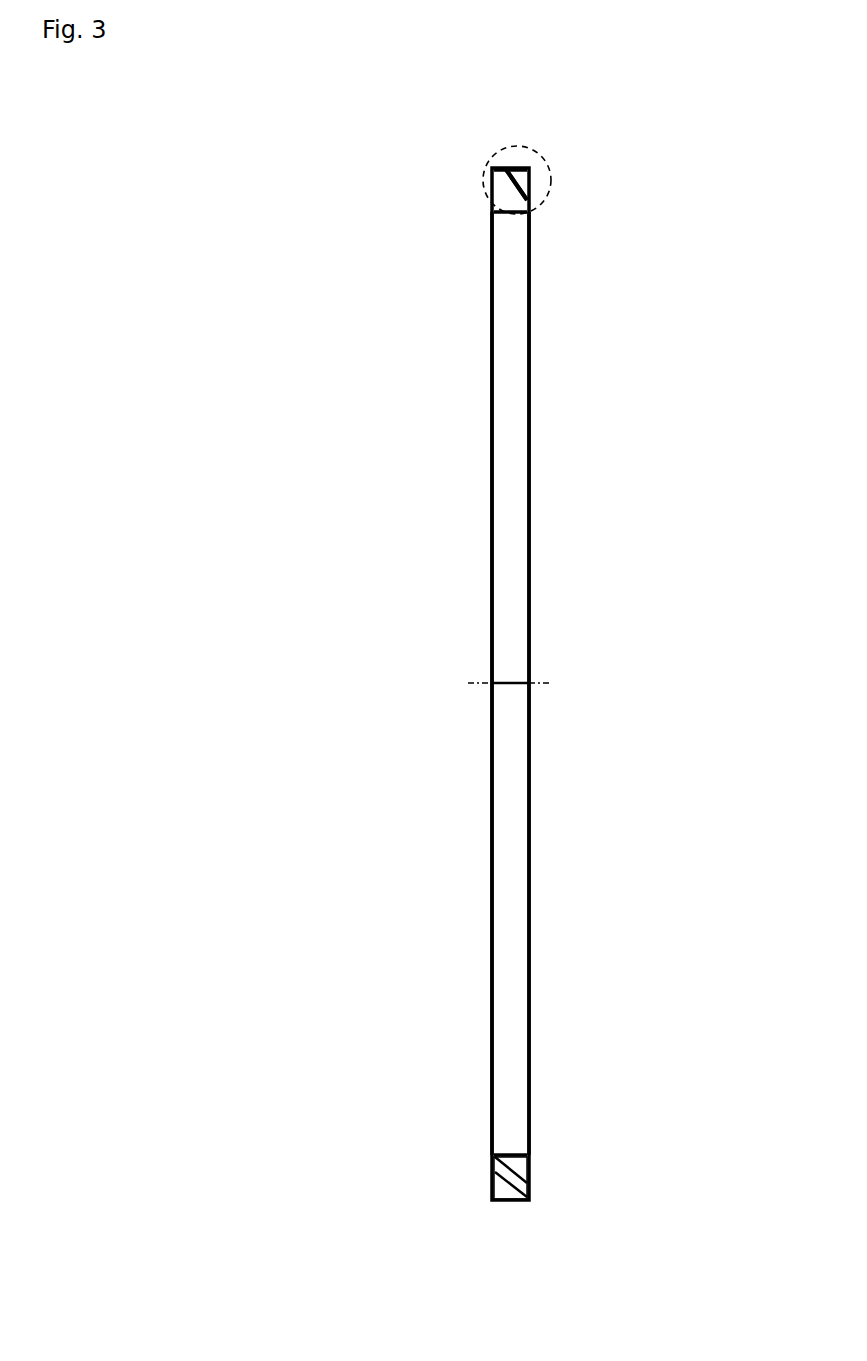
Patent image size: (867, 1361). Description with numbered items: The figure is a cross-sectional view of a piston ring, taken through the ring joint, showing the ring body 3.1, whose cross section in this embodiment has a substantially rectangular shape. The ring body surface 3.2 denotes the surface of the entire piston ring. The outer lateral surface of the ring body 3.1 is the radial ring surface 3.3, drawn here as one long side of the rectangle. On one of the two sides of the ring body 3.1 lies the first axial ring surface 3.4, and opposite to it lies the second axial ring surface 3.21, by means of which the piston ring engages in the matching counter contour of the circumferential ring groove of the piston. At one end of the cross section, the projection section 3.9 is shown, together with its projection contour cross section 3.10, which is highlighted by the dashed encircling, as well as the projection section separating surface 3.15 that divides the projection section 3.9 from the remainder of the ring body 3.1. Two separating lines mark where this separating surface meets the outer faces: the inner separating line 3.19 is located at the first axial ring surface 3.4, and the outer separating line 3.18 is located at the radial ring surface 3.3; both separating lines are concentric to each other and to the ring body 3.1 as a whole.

The ring body 3.1 is at (462, 442).
The ring body surface 3.2 is at (555, 295).
The radial ring surface 3.3 is at (512, 1205).
The first axial ring surface 3.4 is at (530, 498).
The projection section 3.9 is at (530, 178).
The projection contour cross section 3.10 is at (574, 143).
The projection section separating surface 3.15 is at (523, 173).
The outer separating line 3.18 is at (505, 168).
The inner separating line 3.19 is at (530, 200).
The second axial ring surface 3.21 is at (490, 553).